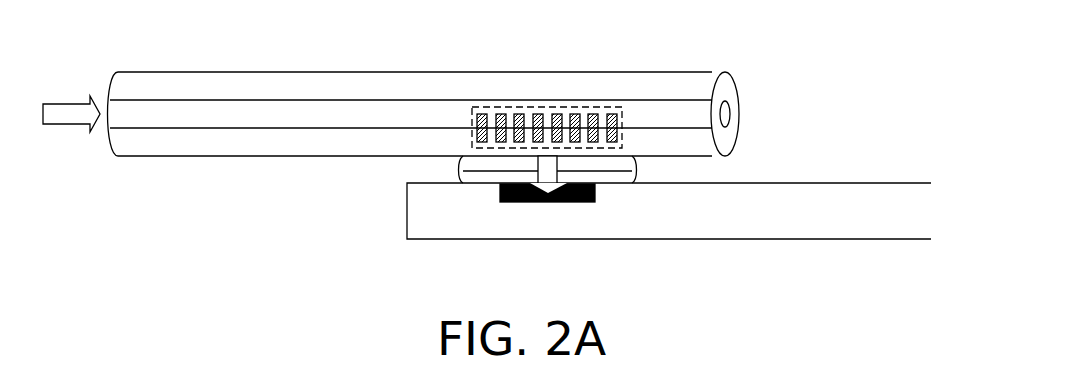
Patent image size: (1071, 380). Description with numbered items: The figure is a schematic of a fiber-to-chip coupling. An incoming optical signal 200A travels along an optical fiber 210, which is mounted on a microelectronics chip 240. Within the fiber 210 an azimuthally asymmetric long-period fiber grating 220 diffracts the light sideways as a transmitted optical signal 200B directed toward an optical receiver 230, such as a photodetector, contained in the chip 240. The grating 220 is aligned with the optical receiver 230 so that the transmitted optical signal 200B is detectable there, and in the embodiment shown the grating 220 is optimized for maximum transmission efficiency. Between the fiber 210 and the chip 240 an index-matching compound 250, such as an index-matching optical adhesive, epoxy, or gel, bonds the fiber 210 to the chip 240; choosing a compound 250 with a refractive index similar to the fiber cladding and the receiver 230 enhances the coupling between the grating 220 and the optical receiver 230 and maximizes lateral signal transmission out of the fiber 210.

The incoming optical signal 200A is at (72, 113).
The diffracted (transmitted) optical signal 200B is at (463, 172).
The optical fiber 210 is at (332, 87).
The azimuthally asymmetric long-period fiber grating (LPFG) 220 is at (547, 108).
The optical receiver 230 is at (580, 196).
The microelectronics chip 240 is at (669, 211).
The index-matching compound 250 is at (632, 171).